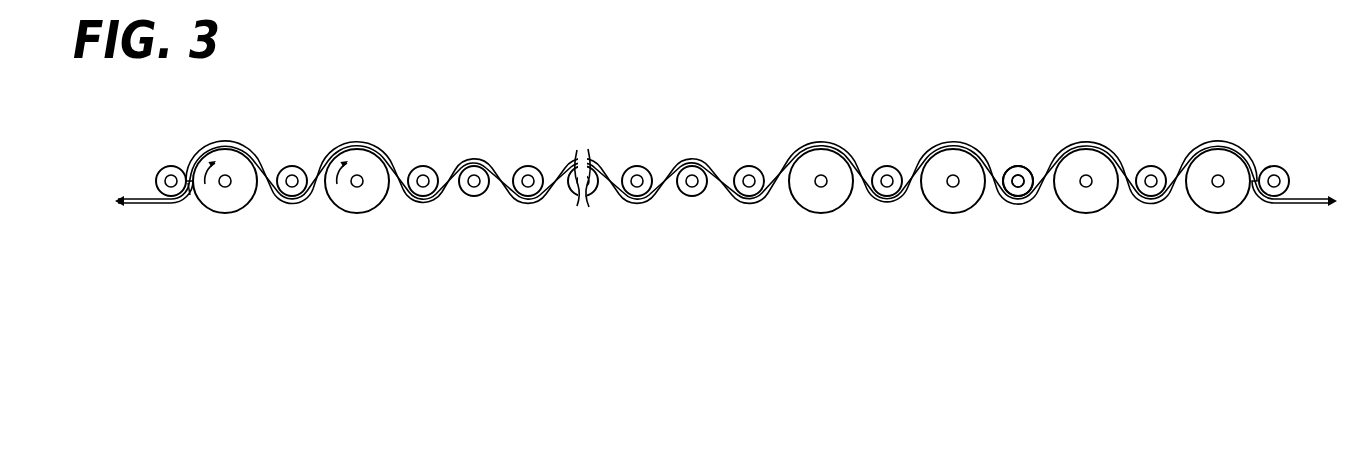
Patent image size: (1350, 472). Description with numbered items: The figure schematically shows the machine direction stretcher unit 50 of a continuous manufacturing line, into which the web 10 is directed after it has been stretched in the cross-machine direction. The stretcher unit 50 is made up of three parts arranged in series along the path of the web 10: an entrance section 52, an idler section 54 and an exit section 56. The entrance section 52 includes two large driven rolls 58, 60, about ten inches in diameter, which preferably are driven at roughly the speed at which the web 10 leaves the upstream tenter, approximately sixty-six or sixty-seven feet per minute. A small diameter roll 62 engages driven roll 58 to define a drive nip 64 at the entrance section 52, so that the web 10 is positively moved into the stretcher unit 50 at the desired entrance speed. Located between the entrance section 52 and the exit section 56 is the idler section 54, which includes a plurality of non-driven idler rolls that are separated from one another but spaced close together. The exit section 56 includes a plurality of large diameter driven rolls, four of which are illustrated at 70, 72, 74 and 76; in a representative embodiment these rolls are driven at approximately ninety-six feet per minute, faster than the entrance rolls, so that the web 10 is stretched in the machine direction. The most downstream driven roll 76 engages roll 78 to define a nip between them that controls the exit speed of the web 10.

The web 10 is at (132, 212).
The machine direction stretcher unit 50 is at (714, 123).
The entrance section 52 is at (289, 156).
The idler section 54 is at (616, 158).
The exit section 56 is at (1019, 156).
The driven roll 58 is at (233, 211).
The driven roll 60 is at (365, 209).
The small diameter roll 62 is at (160, 173).
The drive nip 64 is at (190, 195).
The driven roll 70 is at (826, 210).
The driven roll 72 is at (962, 209).
The driven roll 74 is at (1092, 208).
The driven roll 76 is at (1223, 209).
The roll 78 is at (1273, 164).